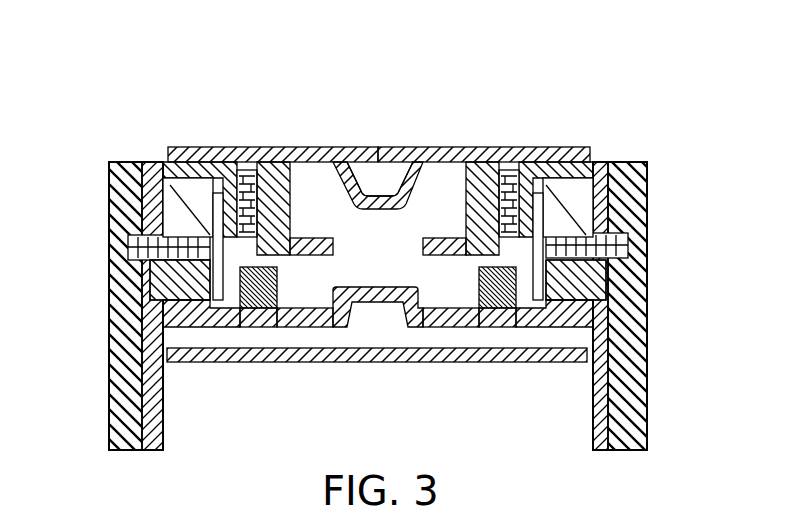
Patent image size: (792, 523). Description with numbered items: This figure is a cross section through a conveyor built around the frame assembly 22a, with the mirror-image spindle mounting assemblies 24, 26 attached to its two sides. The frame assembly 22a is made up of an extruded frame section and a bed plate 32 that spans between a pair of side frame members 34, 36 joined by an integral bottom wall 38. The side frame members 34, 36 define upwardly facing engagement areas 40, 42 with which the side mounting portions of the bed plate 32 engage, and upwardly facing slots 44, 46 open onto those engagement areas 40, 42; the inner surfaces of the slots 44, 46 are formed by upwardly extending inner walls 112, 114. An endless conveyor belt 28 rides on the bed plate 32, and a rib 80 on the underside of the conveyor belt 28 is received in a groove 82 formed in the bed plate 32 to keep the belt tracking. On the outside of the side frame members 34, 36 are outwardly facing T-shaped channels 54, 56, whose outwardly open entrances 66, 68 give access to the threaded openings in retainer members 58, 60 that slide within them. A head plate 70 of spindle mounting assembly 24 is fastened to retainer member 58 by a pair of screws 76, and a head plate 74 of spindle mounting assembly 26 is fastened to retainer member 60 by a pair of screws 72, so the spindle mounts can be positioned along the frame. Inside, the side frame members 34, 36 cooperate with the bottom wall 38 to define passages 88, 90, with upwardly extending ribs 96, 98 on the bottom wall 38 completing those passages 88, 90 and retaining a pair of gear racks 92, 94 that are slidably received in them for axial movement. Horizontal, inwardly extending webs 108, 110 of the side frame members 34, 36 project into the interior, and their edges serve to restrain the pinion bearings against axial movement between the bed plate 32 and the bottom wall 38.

The frame assembly 22a is at (405, 264).
The spindle mounting assembly 24 is at (647, 284).
The spindle mounting assembly 26 is at (129, 288).
The conveyor belt 28 is at (379, 143).
The bed plate 32 is at (393, 143).
The side frame member 34 is at (309, 146).
The side frame member 36 is at (451, 147).
The bottom wall 38 is at (334, 331).
The engagement area 40 is at (196, 157).
The engagement area 42 is at (550, 172).
The slot 44 is at (291, 230).
The slot 46 is at (482, 228).
The T-shaped channel 54 is at (217, 290).
The T-shaped channel 56 is at (536, 300).
The retainer member 58 is at (192, 285).
The retainer member 60 is at (565, 300).
The entrance 66 is at (152, 279).
The entrance 68 is at (597, 281).
The head plate 70 is at (652, 181).
The screw 72 is at (128, 247).
The head plate 74 is at (108, 188).
The screw 76 is at (628, 245).
The rib 80 is at (402, 167).
The groove 82 is at (363, 167).
The passage 88 is at (262, 312).
The passage 90 is at (494, 300).
The gear rack 92 is at (278, 275).
The gear rack 94 is at (478, 277).
The rib 96 is at (318, 310).
The rib 98 is at (450, 303).
The horizontal web 108 is at (358, 236).
The horizontal web 110 is at (423, 246).
The inner wall 112 is at (292, 192).
The inner wall 114 is at (469, 193).